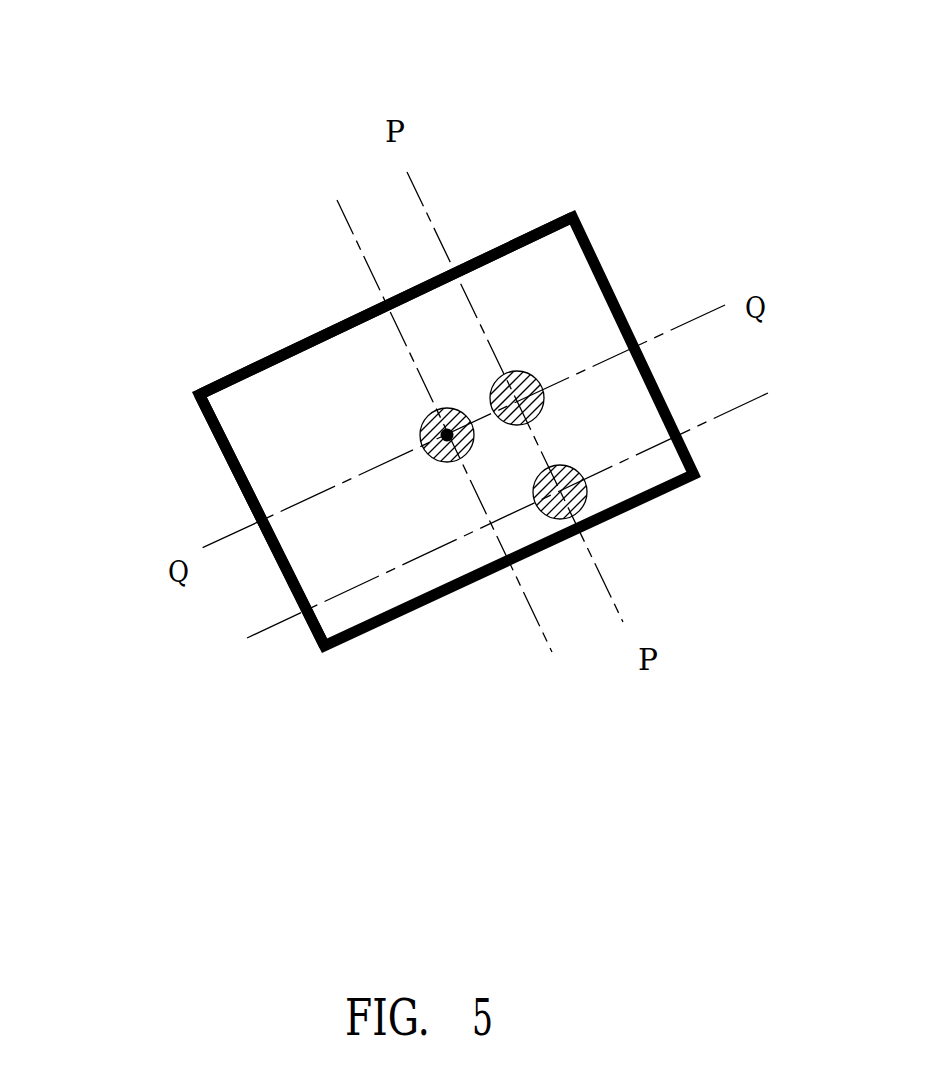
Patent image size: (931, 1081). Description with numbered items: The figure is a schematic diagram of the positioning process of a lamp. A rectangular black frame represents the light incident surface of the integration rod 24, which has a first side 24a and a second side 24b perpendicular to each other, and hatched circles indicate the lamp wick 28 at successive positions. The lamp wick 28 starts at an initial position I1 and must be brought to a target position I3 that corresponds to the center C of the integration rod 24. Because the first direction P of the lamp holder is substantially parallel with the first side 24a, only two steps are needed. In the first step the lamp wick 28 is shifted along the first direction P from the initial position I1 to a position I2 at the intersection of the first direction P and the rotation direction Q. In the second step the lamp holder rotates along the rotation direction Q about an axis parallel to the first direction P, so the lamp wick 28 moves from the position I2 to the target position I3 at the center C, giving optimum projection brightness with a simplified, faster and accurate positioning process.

The integration rod 24 is at (367, 328).
The first side 24a is at (203, 447).
The second side 24b is at (263, 362).
The lamp wick 28 is at (570, 466).
The initial position I1 is at (586, 497).
The position corresponding to intersection I2 is at (514, 373).
The target position I3 is at (420, 430).